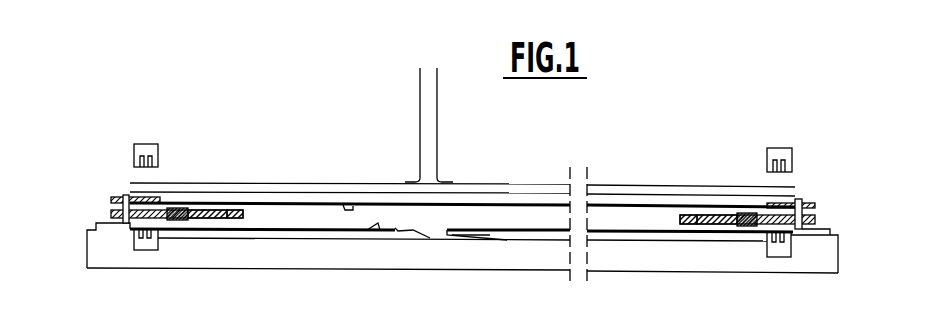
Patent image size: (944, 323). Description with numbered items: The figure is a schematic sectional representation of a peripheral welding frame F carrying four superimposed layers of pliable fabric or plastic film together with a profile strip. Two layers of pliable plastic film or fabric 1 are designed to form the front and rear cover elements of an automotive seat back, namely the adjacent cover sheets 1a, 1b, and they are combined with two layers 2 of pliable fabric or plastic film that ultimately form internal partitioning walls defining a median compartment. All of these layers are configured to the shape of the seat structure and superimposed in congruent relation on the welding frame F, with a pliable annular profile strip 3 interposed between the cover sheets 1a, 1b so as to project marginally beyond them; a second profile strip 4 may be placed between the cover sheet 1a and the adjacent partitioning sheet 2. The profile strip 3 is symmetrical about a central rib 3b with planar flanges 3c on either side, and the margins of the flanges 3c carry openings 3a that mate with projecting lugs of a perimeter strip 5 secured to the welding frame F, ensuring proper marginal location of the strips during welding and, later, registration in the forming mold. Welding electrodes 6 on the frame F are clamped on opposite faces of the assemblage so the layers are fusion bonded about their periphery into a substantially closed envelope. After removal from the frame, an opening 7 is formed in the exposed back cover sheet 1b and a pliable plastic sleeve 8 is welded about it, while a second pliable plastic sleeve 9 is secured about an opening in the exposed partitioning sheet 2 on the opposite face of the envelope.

The welding frame F is at (95, 247).
The layers of pliable plastic film or fabric 1 is at (325, 207).
The cover sheet 1a is at (352, 205).
The cover sheet 1b is at (377, 225).
The layers of pliable fabric or plastic film 2 is at (500, 193).
The profile strip 3 is at (460, 230).
The openings 3a is at (230, 211).
The central rib 3b is at (177, 221).
The planar flanges 3c is at (208, 219).
The second profile strip 4 is at (148, 198).
The perimeter strip 5 is at (126, 196).
The welding electrodes 6 is at (147, 144).
The opening 7 is at (431, 231).
The pliable plastic sleeve 8 is at (487, 238).
The second pliable plastic sleeve 9 is at (418, 113).